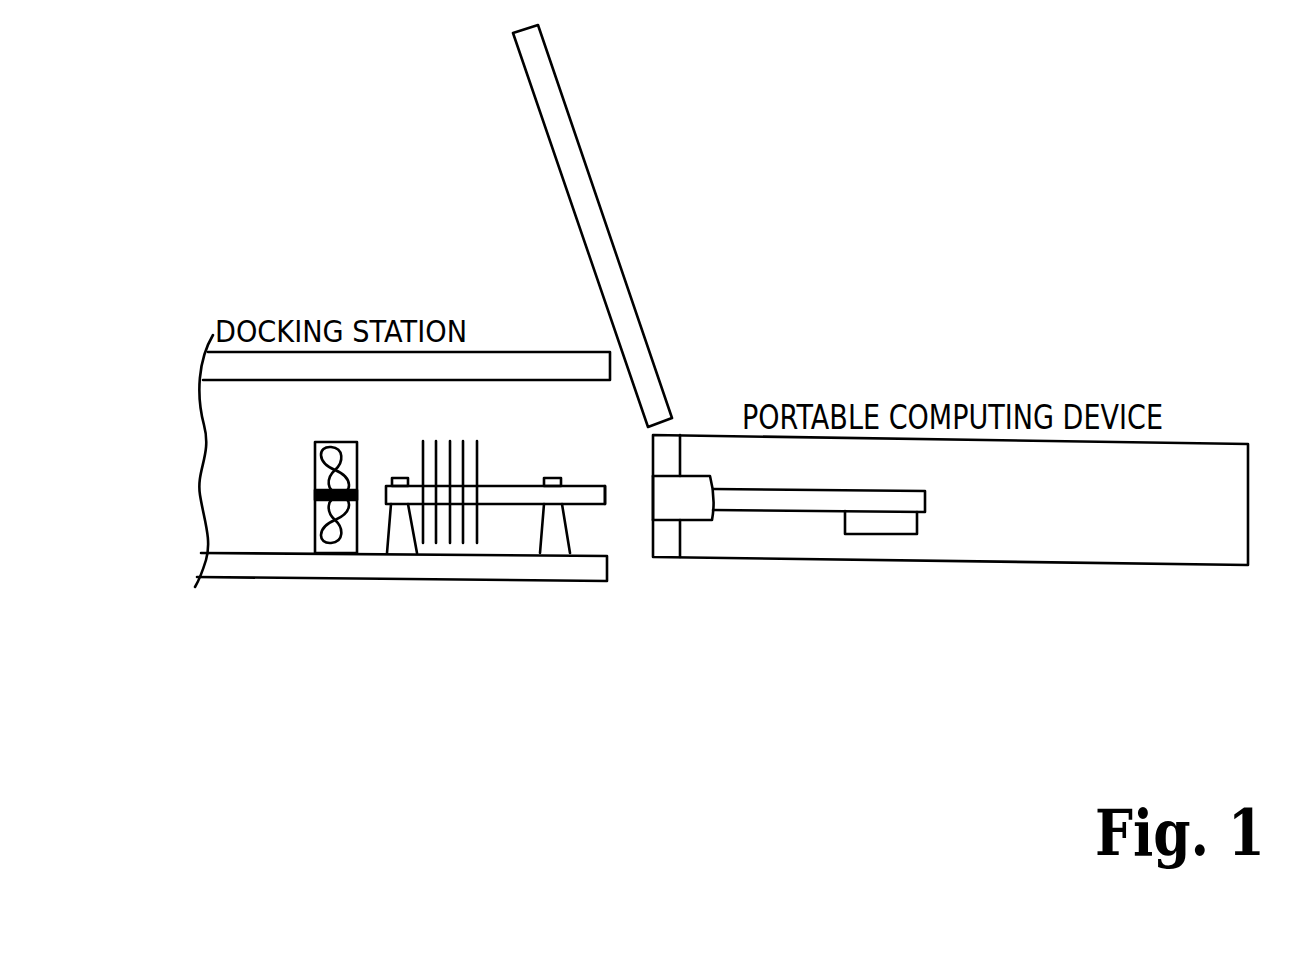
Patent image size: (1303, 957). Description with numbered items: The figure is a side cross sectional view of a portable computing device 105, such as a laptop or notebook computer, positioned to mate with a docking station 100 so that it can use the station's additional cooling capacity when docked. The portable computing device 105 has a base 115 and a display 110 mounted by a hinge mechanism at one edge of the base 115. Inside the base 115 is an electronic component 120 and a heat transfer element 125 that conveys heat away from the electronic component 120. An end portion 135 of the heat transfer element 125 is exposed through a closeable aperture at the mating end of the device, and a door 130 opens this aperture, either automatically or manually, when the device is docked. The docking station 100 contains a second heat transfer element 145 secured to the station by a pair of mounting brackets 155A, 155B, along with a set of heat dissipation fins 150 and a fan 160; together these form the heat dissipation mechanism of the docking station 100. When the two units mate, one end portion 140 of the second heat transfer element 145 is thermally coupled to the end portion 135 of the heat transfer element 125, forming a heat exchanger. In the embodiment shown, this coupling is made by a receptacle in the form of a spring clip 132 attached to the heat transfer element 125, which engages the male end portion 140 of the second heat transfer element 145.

The docking station 100 is at (365, 592).
The portable computing device 105 is at (993, 196).
The display 110 is at (608, 213).
The base 115 is at (1023, 565).
The electronic component 120 is at (917, 527).
The heat transfer element 125 is at (918, 490).
The door 130 is at (652, 463).
The spring clip 132 is at (698, 515).
The end portion 135 is at (650, 500).
The end portion 140 is at (612, 518).
The second heat transfer element 145 is at (503, 463).
The heat dissipation fins 150 is at (445, 428).
The mounting bracket 155A is at (390, 540).
The mounting bracket 155B is at (537, 540).
The fan 160 is at (333, 555).